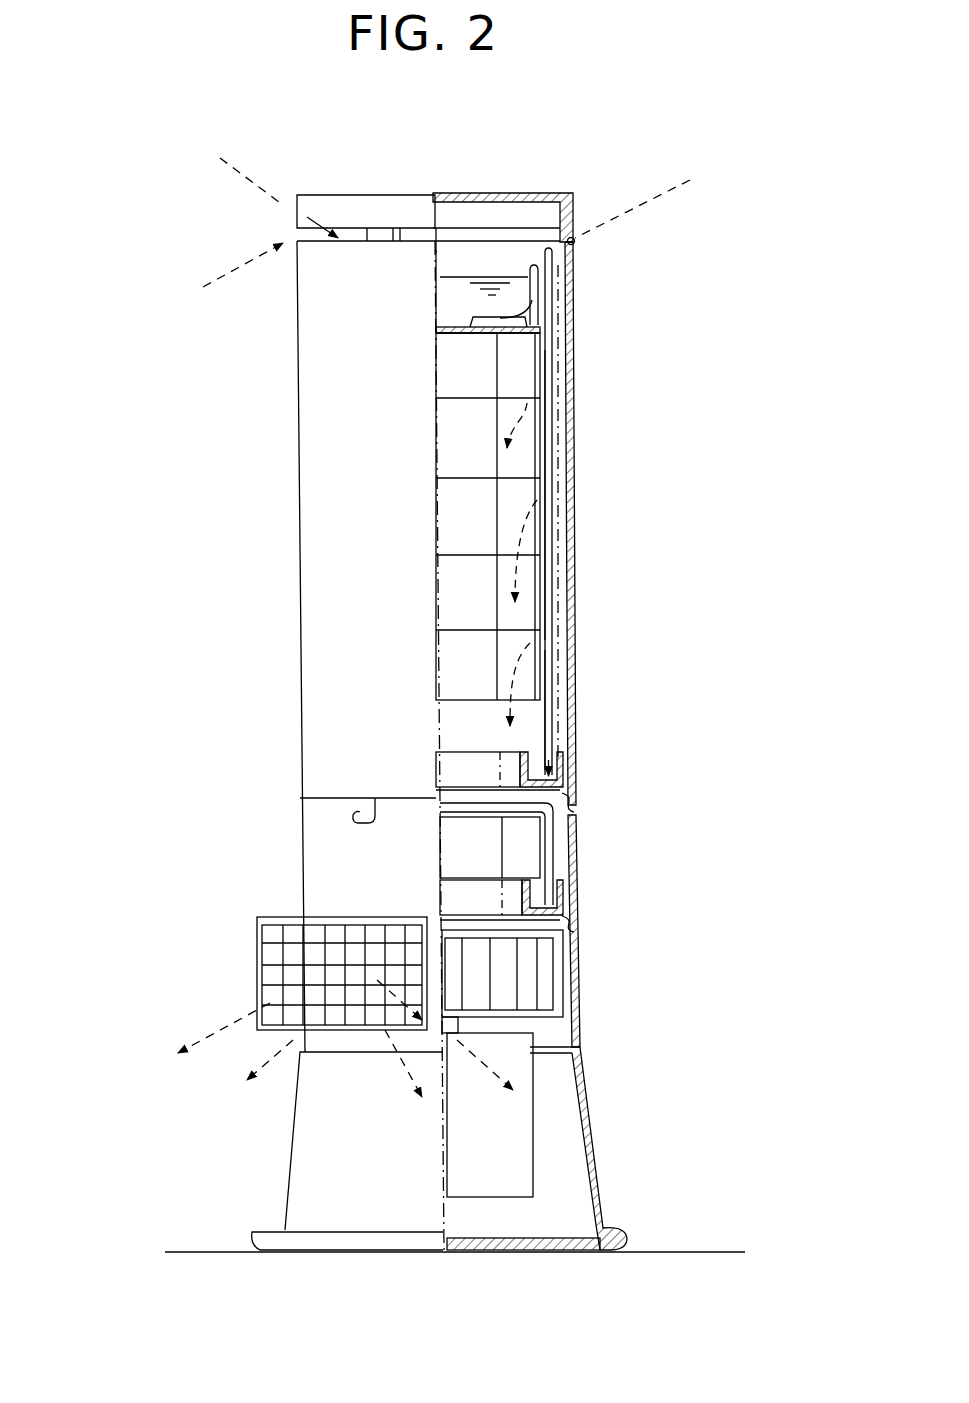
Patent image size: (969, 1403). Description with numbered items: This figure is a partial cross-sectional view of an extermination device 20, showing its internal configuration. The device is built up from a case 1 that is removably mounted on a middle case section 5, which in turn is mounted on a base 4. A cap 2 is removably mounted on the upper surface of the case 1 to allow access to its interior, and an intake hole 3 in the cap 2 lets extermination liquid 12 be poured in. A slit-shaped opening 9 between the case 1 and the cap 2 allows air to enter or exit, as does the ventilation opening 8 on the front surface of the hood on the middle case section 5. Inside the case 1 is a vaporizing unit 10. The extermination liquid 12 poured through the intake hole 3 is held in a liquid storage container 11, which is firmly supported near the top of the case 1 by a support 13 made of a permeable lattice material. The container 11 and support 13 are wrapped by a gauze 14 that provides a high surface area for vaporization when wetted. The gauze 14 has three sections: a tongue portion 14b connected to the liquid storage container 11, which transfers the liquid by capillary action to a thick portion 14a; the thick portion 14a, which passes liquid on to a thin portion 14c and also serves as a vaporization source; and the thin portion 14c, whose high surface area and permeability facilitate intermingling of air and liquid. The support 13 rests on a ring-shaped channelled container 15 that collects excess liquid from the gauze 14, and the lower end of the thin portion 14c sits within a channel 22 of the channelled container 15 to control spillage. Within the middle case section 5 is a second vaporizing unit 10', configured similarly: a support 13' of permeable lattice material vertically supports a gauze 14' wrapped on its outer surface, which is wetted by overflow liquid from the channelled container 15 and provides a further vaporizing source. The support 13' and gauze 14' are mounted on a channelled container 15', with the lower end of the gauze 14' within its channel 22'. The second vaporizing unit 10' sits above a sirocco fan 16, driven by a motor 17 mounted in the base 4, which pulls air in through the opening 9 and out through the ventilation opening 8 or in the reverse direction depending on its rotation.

The case 1 is at (320, 578).
The cap 2 is at (345, 193).
The intake hole 3 is at (508, 194).
The base 4 is at (320, 1125).
The middle case section 5 is at (323, 862).
The ventilation opening 8 is at (312, 965).
The slit-shaped opening 9 is at (295, 238).
The vaporizing unit 10 is at (648, 523).
The second vaporizing unit 10' is at (605, 1004).
The liquid storage container 11 is at (455, 335).
The extermination liquid 12 is at (447, 283).
The support 13 is at (564, 529).
The support 13' is at (571, 855).
The gauze 14 is at (635, 505).
The thick portion 14a is at (553, 460).
The tongue portion 14b is at (500, 307).
The thin portion 14c is at (553, 681).
The gauze 14' is at (587, 854).
The channelled container 15 is at (561, 734).
The channelled container 15' is at (574, 930).
The sirocco fan 16 is at (543, 990).
The motor 17 is at (517, 1130).
The extermination device 20 is at (212, 702).
The channel 22 is at (636, 762).
The channel 22' is at (649, 912).